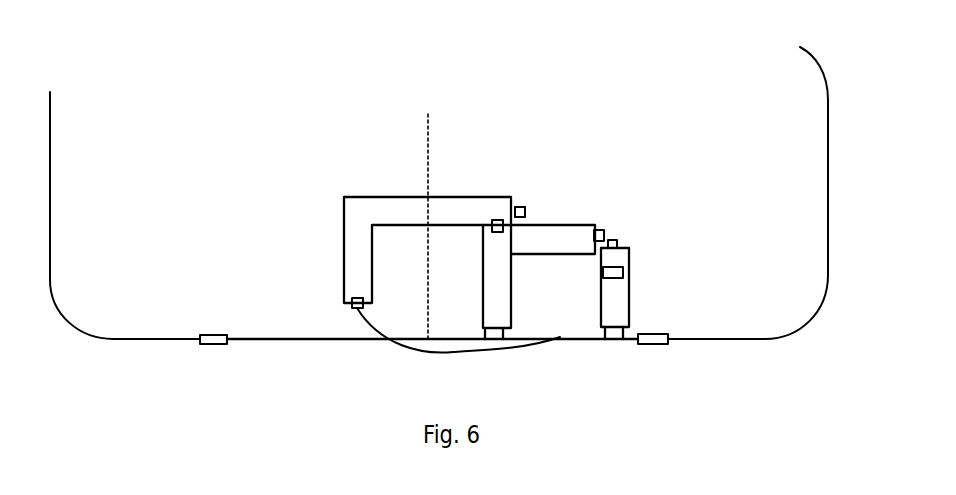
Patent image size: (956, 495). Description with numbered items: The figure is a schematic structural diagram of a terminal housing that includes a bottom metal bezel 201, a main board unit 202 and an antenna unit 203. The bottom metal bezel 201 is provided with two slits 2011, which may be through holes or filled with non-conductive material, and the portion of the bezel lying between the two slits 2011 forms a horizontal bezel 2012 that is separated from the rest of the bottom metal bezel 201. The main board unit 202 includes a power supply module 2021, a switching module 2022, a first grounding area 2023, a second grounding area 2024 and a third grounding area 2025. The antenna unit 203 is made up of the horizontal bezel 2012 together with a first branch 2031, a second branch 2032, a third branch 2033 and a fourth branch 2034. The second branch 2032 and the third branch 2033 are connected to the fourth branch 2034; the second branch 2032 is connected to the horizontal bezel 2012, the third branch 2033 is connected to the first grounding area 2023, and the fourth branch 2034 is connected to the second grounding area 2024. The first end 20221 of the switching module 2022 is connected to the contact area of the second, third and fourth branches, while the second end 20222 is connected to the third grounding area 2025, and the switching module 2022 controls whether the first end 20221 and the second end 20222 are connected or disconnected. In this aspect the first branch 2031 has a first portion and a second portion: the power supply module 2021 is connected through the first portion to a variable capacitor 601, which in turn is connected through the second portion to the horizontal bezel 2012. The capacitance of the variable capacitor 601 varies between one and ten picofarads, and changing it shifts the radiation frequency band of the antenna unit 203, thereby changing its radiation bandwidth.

The bottom metal bezel 201 is at (747, 339).
The slits 2011 is at (213, 344).
The horizontal bezel 2012 is at (330, 339).
The main board unit 202 is at (722, 75).
The power supply module 2021 is at (617, 242).
The switching module 2022 is at (634, 63).
The first end 20221 is at (497, 220).
The second end 20222 is at (521, 207).
The first grounding area 2023 is at (604, 230).
The second grounding area 2024 is at (560, 337).
The third grounding area 2025 is at (525, 207).
The antenna unit 203 is at (158, 174).
The first branch 2031 is at (600, 288).
The second branch 2032 is at (482, 245).
The third branch 2033 is at (552, 255).
The fourth branch 2034 is at (357, 222).
The variable capacitor 601 is at (612, 272).